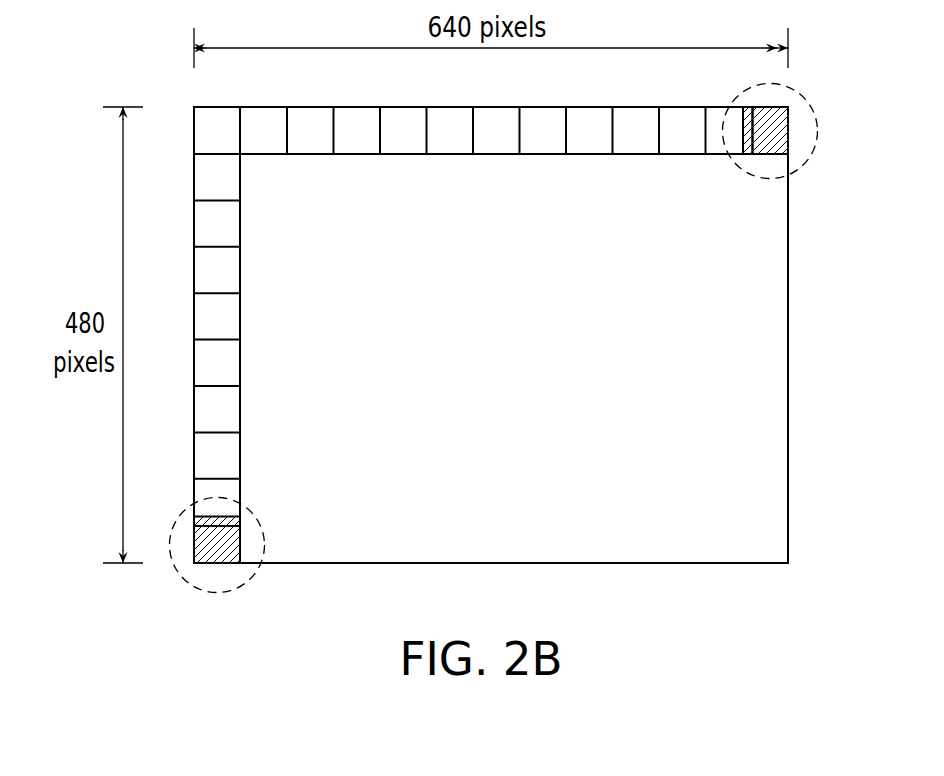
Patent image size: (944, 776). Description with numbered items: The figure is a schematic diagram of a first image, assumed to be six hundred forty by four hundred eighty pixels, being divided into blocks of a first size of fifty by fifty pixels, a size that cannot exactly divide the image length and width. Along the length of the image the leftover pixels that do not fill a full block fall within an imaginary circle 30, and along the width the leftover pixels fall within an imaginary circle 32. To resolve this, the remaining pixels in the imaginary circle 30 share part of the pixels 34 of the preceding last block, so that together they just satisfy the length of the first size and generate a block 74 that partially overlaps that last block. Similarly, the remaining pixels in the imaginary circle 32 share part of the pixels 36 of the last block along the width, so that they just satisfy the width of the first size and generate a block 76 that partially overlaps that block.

The imaginary circle 30 is at (804, 98).
The imaginary circle 32 is at (220, 592).
The pixels 34 is at (746, 160).
The pixels 36 is at (243, 520).
The block 74 is at (763, 154).
The block 76 is at (242, 546).